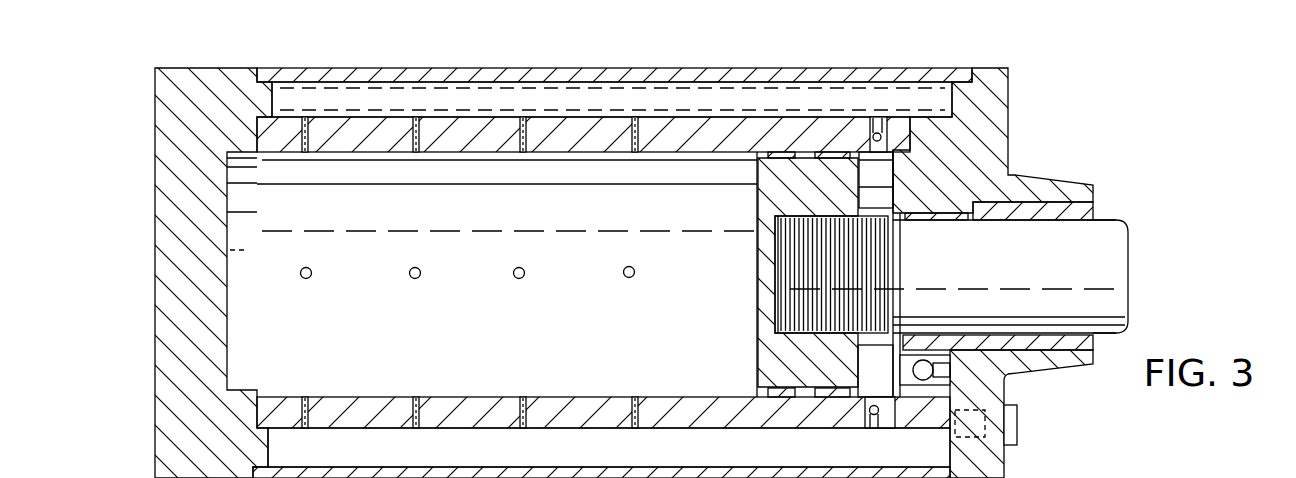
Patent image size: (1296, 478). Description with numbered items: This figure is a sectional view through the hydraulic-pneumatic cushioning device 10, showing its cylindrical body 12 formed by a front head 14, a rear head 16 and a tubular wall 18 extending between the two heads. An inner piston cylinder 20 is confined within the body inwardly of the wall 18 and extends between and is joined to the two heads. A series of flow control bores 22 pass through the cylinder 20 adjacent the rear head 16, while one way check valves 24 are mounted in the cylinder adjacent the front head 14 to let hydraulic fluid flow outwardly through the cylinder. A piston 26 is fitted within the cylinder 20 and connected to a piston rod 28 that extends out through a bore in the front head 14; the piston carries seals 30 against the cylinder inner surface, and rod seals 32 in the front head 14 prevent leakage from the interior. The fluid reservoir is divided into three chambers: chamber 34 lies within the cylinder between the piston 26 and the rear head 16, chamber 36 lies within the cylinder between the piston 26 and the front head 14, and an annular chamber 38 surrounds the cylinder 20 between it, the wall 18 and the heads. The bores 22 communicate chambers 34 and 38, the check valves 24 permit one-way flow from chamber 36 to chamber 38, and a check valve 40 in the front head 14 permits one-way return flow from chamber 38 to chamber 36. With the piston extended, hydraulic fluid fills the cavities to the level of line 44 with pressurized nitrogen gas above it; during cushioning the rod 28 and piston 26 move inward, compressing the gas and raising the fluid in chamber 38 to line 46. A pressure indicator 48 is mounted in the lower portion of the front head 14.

The hydraulic-pneumatic cushioning device 10 is at (1104, 133).
The cylindrical body 12 is at (828, 66).
The front head 14 is at (998, 68).
The rear head 16 is at (155, 108).
The tubular wall 18 is at (372, 67).
The inner piston cylinder 20 is at (565, 135).
The flow control bores 22 is at (306, 152).
The one way check valves 24 is at (878, 120).
The piston 26 is at (757, 330).
The piston rod 28 is at (1116, 220).
The seals 30 is at (830, 396).
The rod seals 32 is at (1016, 177).
The chamber 34 is at (668, 300).
The chamber 36 is at (868, 372).
The annular chamber 38 is at (580, 458).
The check valve 40 is at (1012, 377).
The line 44 is at (522, 112).
The line 46 is at (718, 90).
The pressure indicator 48 is at (1018, 438).